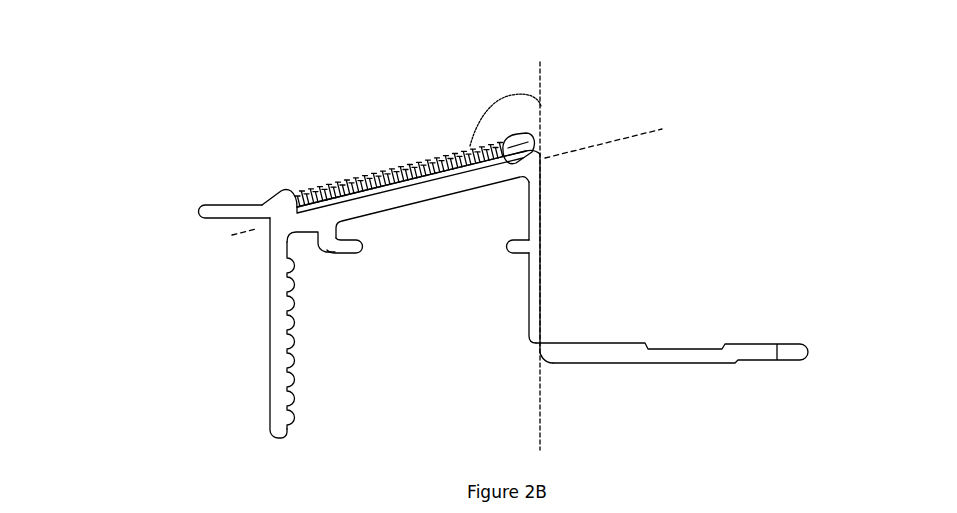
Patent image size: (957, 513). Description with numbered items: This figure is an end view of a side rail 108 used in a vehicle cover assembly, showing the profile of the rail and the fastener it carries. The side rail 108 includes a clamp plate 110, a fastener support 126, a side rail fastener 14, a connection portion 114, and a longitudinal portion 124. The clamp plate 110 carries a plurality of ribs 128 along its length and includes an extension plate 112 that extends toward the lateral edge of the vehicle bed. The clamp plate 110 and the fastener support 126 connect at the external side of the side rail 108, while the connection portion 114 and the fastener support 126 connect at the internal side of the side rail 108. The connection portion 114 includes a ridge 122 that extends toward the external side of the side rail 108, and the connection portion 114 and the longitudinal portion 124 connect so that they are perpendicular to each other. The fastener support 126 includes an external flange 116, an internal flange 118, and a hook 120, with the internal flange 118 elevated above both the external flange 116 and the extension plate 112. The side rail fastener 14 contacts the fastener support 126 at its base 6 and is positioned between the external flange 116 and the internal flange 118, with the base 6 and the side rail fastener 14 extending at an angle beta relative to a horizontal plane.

The base 6 is at (506, 158).
The side rail fastener 14 is at (379, 139).
The side rail 108 is at (588, 193).
The clamp plate 110 is at (227, 360).
The extension plate 112 is at (232, 210).
The connection portion 114 is at (542, 285).
The external flange 116 is at (281, 191).
The internal flange 118 is at (521, 131).
The hook 120 is at (350, 247).
The ridge 122 is at (515, 248).
The longitudinal portion 124 is at (675, 353).
The fastener support 126 is at (438, 186).
The ribs 128 is at (290, 392).